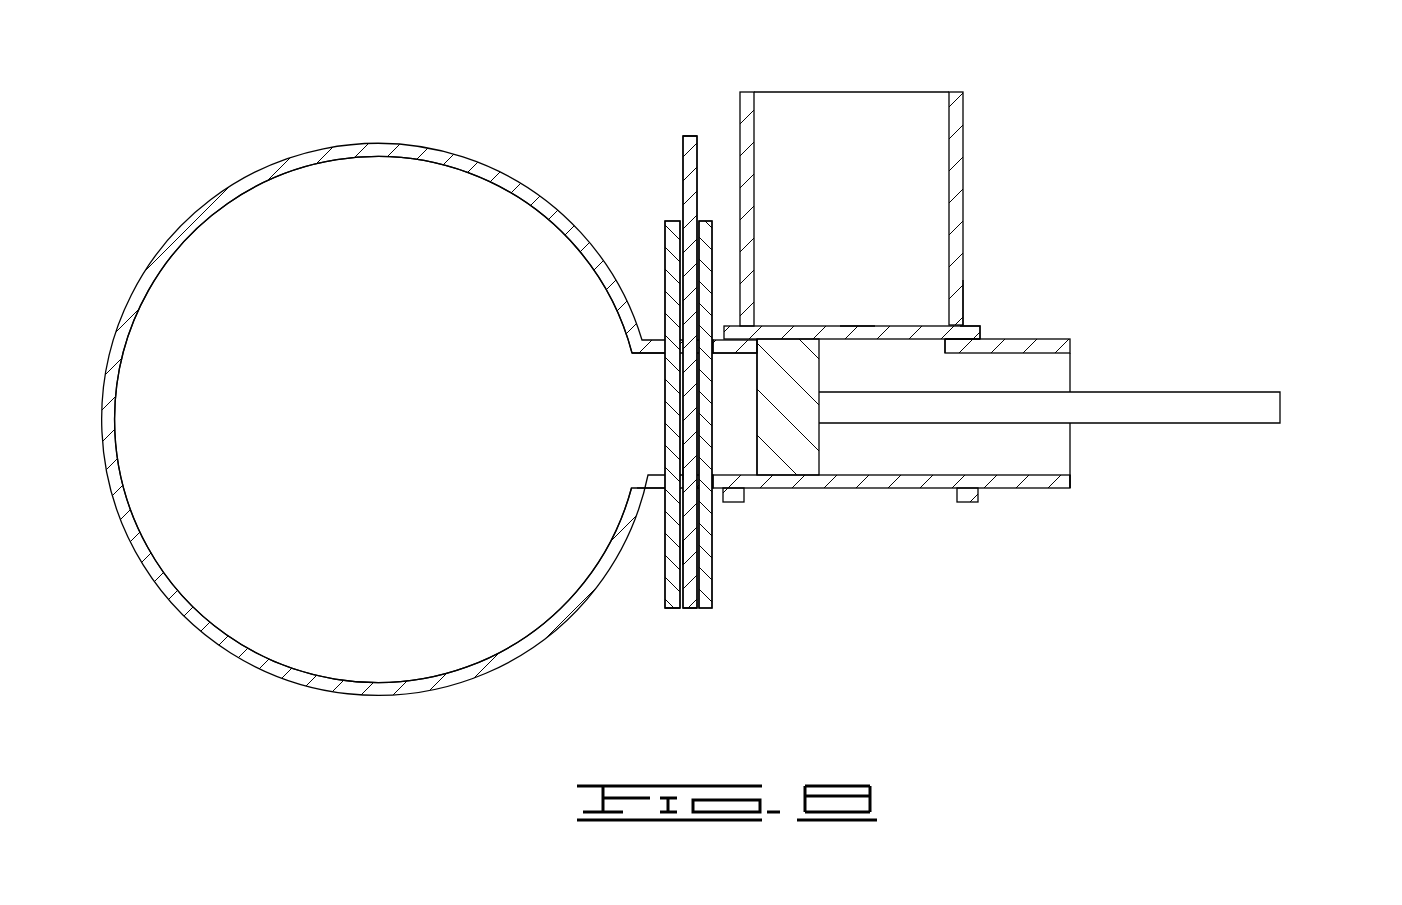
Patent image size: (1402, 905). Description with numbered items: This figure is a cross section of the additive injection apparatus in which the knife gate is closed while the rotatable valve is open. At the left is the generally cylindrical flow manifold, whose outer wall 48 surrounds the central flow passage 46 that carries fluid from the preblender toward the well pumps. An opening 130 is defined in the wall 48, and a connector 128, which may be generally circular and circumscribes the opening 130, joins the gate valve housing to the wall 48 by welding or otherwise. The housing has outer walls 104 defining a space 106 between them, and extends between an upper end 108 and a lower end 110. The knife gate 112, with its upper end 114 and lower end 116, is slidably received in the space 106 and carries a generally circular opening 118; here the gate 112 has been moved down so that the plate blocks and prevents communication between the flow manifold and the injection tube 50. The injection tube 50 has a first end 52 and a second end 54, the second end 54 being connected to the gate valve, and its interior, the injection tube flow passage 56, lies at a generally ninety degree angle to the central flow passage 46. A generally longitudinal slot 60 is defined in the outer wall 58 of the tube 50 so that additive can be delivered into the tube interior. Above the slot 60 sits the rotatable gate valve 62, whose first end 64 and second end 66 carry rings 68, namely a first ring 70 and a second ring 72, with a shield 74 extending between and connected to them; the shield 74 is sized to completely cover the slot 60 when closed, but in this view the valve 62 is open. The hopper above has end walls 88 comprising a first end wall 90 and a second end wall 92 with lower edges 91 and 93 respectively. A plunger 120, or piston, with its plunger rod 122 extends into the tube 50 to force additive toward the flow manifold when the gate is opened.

The central flow passage 46 is at (215, 575).
The outer wall 48 is at (196, 212).
The injection tube 50 is at (890, 490).
The first end 52 is at (1072, 342).
The second end 54 is at (722, 355).
The injection tube flow passage 56 is at (1045, 450).
The outer wall 58 is at (1065, 490).
The slot 60 is at (945, 343).
The rotatable gate valve 62 is at (952, 337).
The first end 64 is at (978, 330).
The second end 66 is at (716, 326).
The rings 68 is at (1024, 545).
The first ring 70 is at (968, 503).
The second ring 72 is at (735, 503).
The shield 74 is at (857, 325).
The end walls 88 is at (916, 209).
The first end wall 90 is at (965, 150).
The lower edge 91 is at (962, 323).
The second end wall 92 is at (755, 152).
The lower edge 93 is at (744, 328).
The outer walls 104 is at (665, 568).
The space 106 is at (688, 550).
The upper end 108 is at (672, 235).
The lower end 110 is at (672, 609).
The knife gate 112 is at (685, 195).
The upper end 114 is at (692, 134).
The lower end 116 is at (690, 609).
The opening 118 is at (684, 462).
The plunger 120 is at (1250, 392).
The plunger rod 122 is at (802, 460).
The connector 128 is at (657, 490).
The opening 130 is at (640, 362).